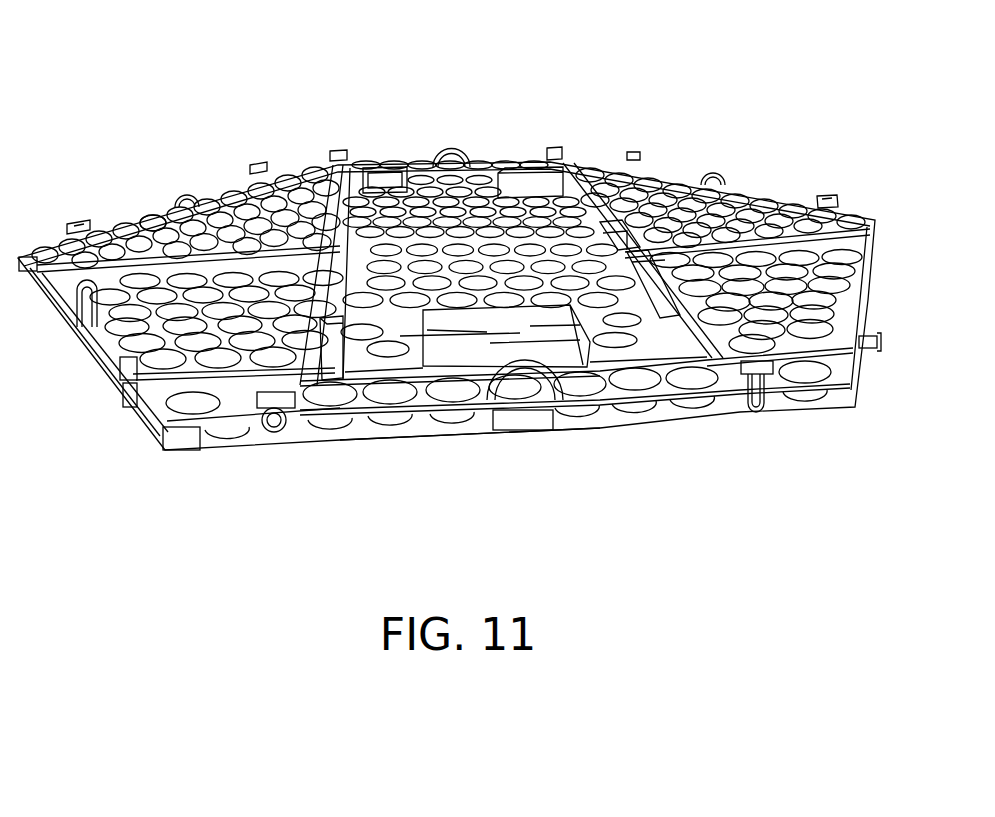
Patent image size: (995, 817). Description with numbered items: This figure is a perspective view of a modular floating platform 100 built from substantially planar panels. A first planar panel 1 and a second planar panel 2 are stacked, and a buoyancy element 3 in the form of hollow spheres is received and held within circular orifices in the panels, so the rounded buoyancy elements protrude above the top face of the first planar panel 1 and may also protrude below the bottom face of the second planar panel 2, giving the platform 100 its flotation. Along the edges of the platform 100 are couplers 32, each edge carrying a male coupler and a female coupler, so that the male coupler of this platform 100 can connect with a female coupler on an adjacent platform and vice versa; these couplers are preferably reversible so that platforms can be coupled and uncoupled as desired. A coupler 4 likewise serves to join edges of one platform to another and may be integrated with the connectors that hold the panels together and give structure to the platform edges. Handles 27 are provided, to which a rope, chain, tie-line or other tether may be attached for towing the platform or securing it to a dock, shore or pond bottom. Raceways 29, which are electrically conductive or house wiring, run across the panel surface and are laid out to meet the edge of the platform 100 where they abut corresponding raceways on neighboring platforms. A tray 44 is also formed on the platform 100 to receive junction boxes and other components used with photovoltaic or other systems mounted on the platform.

The modular floating platform 100 is at (158, 94).
The buoyancy element 3 is at (150, 207).
The handle 27 is at (200, 197).
The raceway 29 is at (320, 367).
The coupler 32 is at (260, 442).
The first planar panel 1 is at (362, 403).
The second planar panel 2 is at (423, 427).
The coupler 4 is at (525, 420).
The tray 44 is at (557, 350).